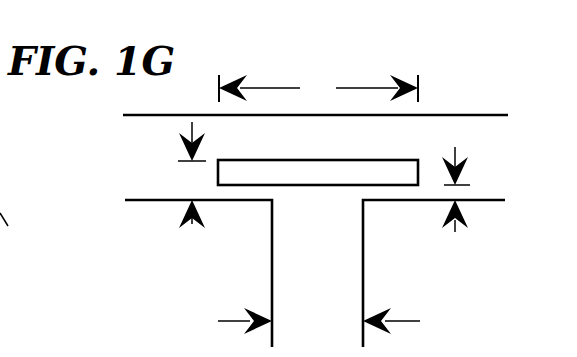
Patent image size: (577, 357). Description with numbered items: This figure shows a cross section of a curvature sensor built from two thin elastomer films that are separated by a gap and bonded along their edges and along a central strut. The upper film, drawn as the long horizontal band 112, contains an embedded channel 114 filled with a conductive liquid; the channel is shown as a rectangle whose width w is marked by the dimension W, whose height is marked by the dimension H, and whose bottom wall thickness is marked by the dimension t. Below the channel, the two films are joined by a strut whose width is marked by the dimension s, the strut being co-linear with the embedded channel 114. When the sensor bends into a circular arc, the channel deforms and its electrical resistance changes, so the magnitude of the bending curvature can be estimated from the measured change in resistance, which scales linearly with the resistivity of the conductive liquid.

The ground plane layer 112 is at (442, 145).
The signal conductor strip 114 is at (298, 167).
The width of embedded channel W is at (318, 88).
The height of embedded channel H is at (193, 191).
The bottom wall thickness t is at (453, 204).
The strut width s is at (319, 321).